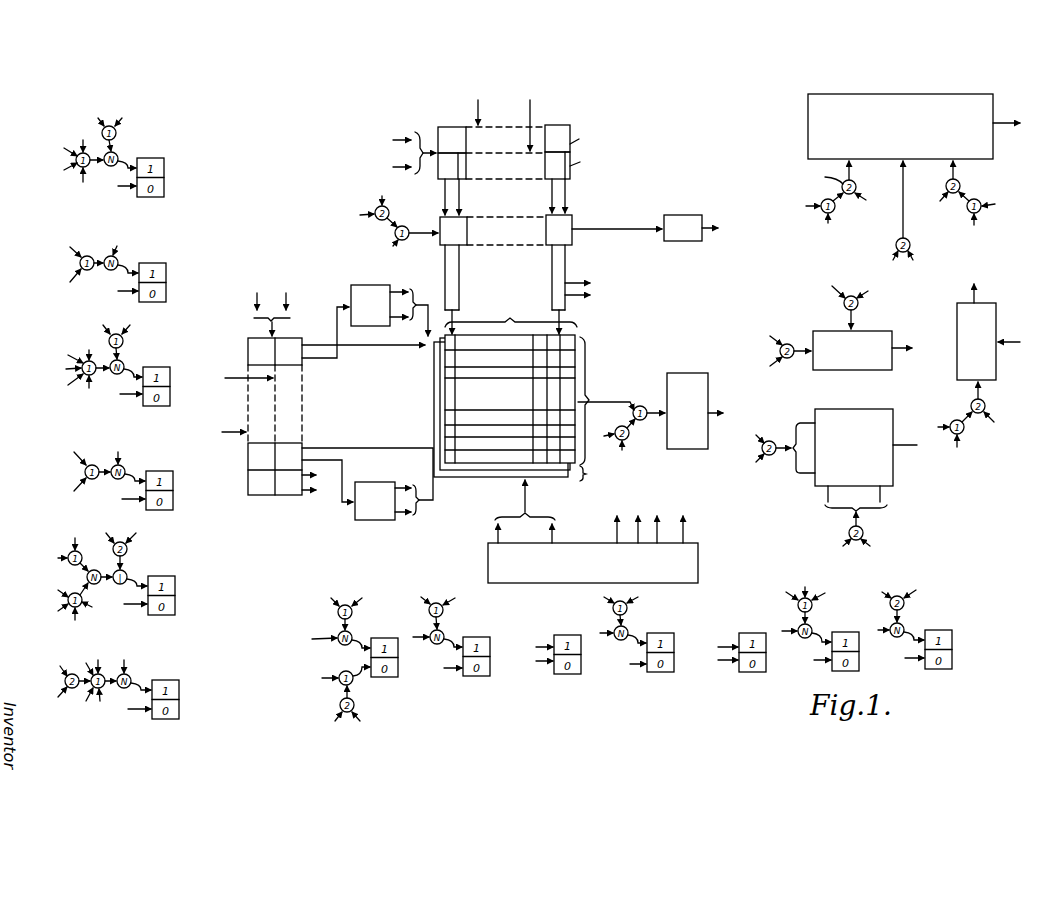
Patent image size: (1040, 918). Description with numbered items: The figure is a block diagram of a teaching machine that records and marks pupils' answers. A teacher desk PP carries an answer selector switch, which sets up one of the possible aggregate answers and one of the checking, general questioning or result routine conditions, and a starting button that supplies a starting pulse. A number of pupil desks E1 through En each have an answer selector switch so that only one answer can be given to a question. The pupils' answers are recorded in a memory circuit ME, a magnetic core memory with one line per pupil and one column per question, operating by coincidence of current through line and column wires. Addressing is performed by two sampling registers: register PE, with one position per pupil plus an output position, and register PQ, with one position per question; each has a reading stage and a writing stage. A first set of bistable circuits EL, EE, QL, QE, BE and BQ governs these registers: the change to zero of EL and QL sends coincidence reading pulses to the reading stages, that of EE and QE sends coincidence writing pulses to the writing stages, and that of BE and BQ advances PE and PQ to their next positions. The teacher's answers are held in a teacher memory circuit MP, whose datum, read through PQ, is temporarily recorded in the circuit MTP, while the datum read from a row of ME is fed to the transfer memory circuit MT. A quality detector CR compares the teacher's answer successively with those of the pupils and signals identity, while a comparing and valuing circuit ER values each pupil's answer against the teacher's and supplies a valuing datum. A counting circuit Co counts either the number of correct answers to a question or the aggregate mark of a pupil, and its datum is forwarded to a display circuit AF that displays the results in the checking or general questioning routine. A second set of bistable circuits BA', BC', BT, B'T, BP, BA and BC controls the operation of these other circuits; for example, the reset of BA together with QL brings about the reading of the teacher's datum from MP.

The bistable circuit EL is at (146, 162).
The bistable circuit EE is at (150, 265).
The bistable circuit QL is at (110, 359).
The bistable circuit QE is at (116, 475).
The bistable circuit BE is at (109, 576).
The bistable circuit BQ is at (114, 683).
The sampling register PE is at (300, 513).
The pupil desk E1 is at (365, 317).
The pupil desk En is at (367, 484).
The memory circuit ME is at (517, 397).
The sampling register PQ is at (608, 130).
The teacher memory circuit MP is at (572, 219).
The temporary recording circuit MTP is at (701, 228).
The teacher desk PP is at (593, 531).
The transfer memory circuit MT is at (660, 419).
The display circuit AF is at (906, 185).
The comparing and valuing circuit ER is at (831, 324).
The quality detector CR is at (827, 484).
The counting circuit Co is at (973, 366).
The bistable circuit BA' is at (347, 657).
The bistable circuit BC' is at (445, 629).
The bistable circuit BT is at (544, 646).
The bistable circuit B'T is at (631, 630).
The bistable circuit BP is at (729, 644).
The bistable circuit BA is at (812, 620).
The bistable circuit BC is at (906, 622).